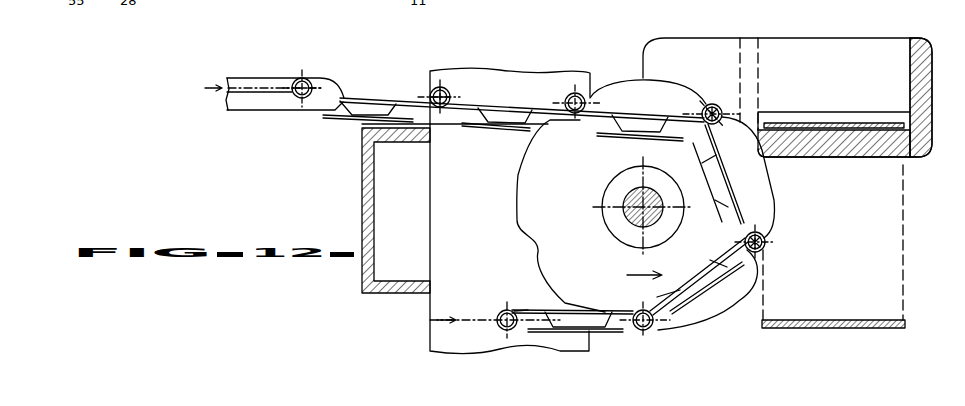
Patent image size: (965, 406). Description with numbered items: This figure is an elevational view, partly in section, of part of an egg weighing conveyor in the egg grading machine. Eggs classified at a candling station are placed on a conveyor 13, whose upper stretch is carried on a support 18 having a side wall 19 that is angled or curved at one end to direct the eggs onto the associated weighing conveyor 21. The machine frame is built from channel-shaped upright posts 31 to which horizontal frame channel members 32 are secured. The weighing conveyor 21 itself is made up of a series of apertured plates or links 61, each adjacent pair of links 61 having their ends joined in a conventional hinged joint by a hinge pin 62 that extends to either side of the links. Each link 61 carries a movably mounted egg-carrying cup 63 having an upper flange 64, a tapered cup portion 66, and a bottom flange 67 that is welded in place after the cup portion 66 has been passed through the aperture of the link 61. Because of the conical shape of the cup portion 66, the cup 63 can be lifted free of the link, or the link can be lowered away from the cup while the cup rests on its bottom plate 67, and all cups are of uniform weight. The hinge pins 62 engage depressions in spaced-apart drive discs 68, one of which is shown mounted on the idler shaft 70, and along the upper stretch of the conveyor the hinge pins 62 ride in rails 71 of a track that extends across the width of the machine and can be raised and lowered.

The conveyor 13 is at (857, 112).
The support 18 is at (918, 152).
The side wall 19 is at (835, 41).
The weighing conveyor 21 is at (607, 83).
The upright post 31 is at (430, 343).
The horizontal frame channel member 32 is at (362, 200).
The link 61 is at (480, 100).
The hinge pin 62 is at (428, 92).
The egg-carrying cup 63 is at (378, 93).
The upper flange 64 is at (599, 331).
The tapered cup portion 66 is at (355, 95).
The bottom flange 67 is at (326, 120).
The drive disc 68 is at (522, 192).
The idler shaft 70 is at (628, 216).
The rail 71 is at (250, 108).